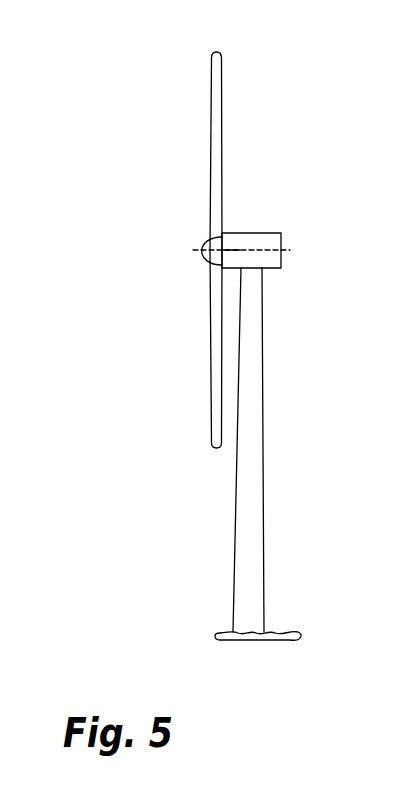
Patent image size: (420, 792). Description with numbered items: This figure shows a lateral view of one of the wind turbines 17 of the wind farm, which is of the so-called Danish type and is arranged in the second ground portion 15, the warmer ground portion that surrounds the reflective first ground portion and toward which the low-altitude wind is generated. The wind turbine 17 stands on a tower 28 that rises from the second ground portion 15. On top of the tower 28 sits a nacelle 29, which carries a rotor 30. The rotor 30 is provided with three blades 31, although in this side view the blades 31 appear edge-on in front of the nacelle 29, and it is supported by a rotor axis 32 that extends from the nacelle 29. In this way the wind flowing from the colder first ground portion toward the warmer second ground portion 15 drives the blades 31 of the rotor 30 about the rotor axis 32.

The second ground portion 15 is at (228, 633).
The wind turbine 17 is at (116, 292).
The tower 28 is at (252, 446).
The nacelle 29 is at (267, 243).
The rotor 30 is at (205, 244).
The blades 31 is at (210, 157).
The rotor axis 32 is at (240, 257).